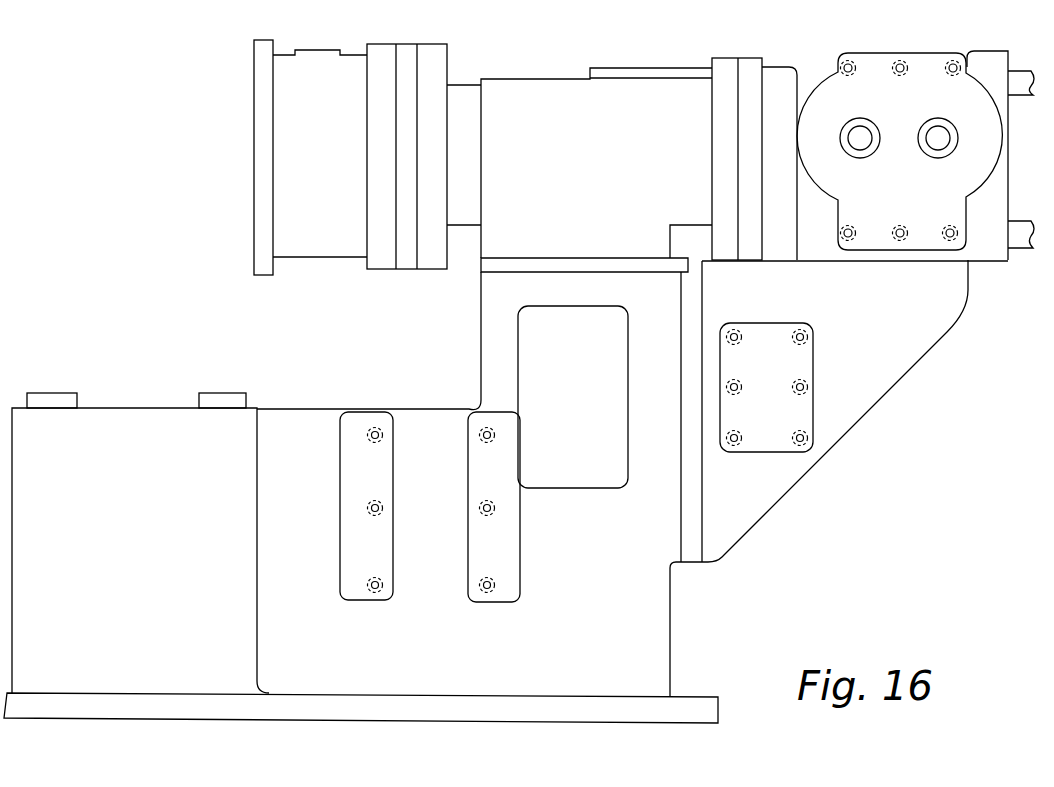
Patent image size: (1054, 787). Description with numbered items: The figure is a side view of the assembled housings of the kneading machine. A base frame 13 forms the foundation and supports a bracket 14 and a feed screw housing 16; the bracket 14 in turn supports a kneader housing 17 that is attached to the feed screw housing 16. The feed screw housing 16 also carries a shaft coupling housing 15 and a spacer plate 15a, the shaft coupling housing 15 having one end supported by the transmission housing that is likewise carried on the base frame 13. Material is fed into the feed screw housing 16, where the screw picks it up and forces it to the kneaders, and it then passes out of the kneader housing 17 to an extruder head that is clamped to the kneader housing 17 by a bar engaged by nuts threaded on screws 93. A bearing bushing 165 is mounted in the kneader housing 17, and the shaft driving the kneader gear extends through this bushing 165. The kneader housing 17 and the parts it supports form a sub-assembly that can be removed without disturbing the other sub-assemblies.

The base frame 13 is at (300, 410).
The bracket 14 is at (928, 352).
The shaft coupling housing 15 is at (338, 49).
The spacer plate 15a is at (408, 44).
The feed screw housing 16 is at (596, 66).
The kneader housing 17 is at (885, 63).
The bearing bushing 165 is at (850, 158).
The screws 93 is at (1025, 72).